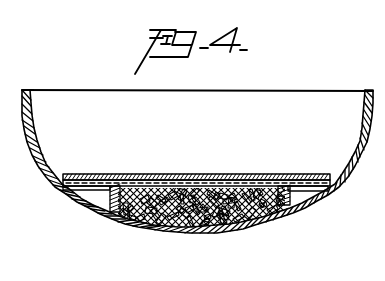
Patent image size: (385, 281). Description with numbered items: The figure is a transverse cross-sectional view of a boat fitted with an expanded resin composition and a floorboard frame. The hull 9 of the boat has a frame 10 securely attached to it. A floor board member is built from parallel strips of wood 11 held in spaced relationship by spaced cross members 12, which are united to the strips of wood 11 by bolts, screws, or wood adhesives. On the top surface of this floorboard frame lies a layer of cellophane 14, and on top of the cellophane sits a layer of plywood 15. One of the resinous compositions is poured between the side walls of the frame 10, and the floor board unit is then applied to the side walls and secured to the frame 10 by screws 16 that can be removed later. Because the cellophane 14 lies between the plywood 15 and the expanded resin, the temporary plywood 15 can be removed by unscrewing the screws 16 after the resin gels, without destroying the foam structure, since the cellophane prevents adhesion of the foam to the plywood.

The hull 9 is at (155, 227).
The frame 10 is at (88, 205).
The strips of wood 11 is at (228, 190).
The cross members 12 is at (168, 186).
The layer of cellophane 14 is at (145, 175).
The layer of plywood 15 is at (292, 182).
The screws 16 is at (116, 190).